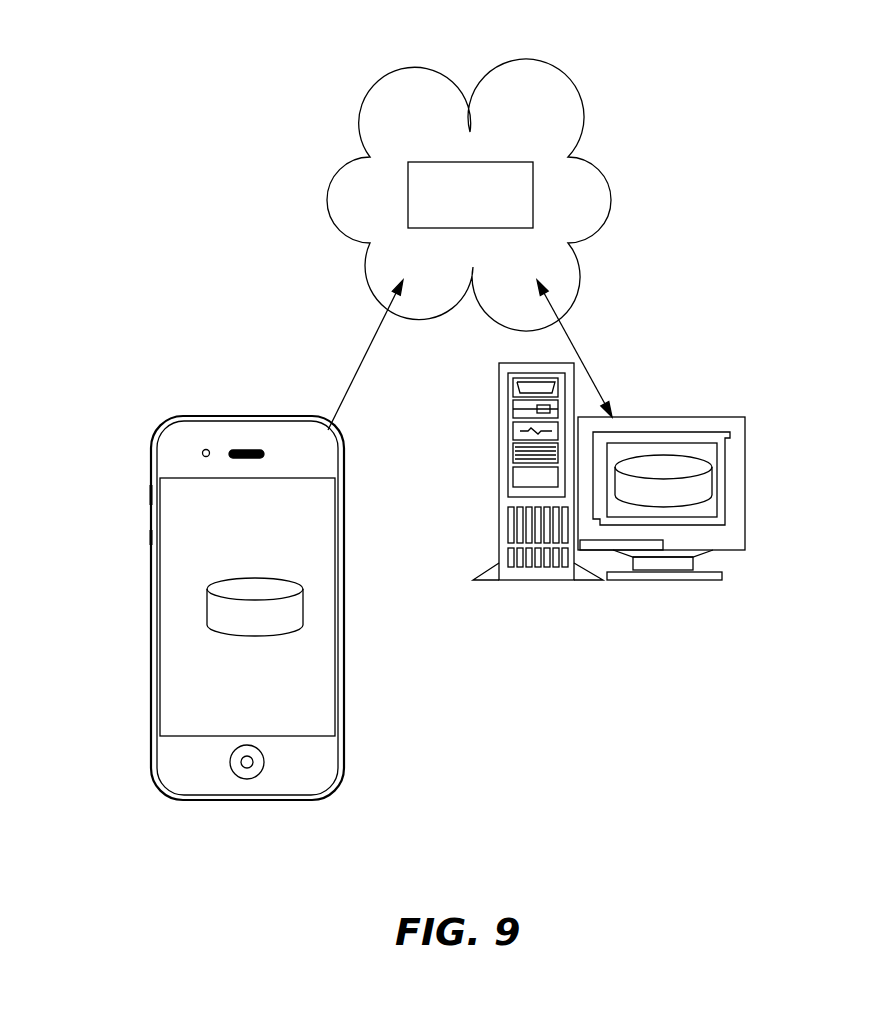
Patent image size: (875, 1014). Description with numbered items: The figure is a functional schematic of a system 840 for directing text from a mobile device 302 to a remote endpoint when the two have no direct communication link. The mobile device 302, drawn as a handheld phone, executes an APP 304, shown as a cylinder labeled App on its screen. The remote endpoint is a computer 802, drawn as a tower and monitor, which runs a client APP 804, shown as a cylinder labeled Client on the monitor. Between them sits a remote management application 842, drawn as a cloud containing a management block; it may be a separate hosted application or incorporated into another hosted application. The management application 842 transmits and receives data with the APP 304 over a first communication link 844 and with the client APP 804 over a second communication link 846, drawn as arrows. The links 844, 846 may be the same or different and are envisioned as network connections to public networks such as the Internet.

The system 840 is at (730, 70).
The management application 842 is at (580, 193).
The first communication link 844 is at (370, 346).
The second communication link 846 is at (587, 363).
The mobile device 302 is at (249, 610).
The APP 304 is at (290, 613).
The computer 802 is at (664, 526).
The client APP 804 is at (707, 478).